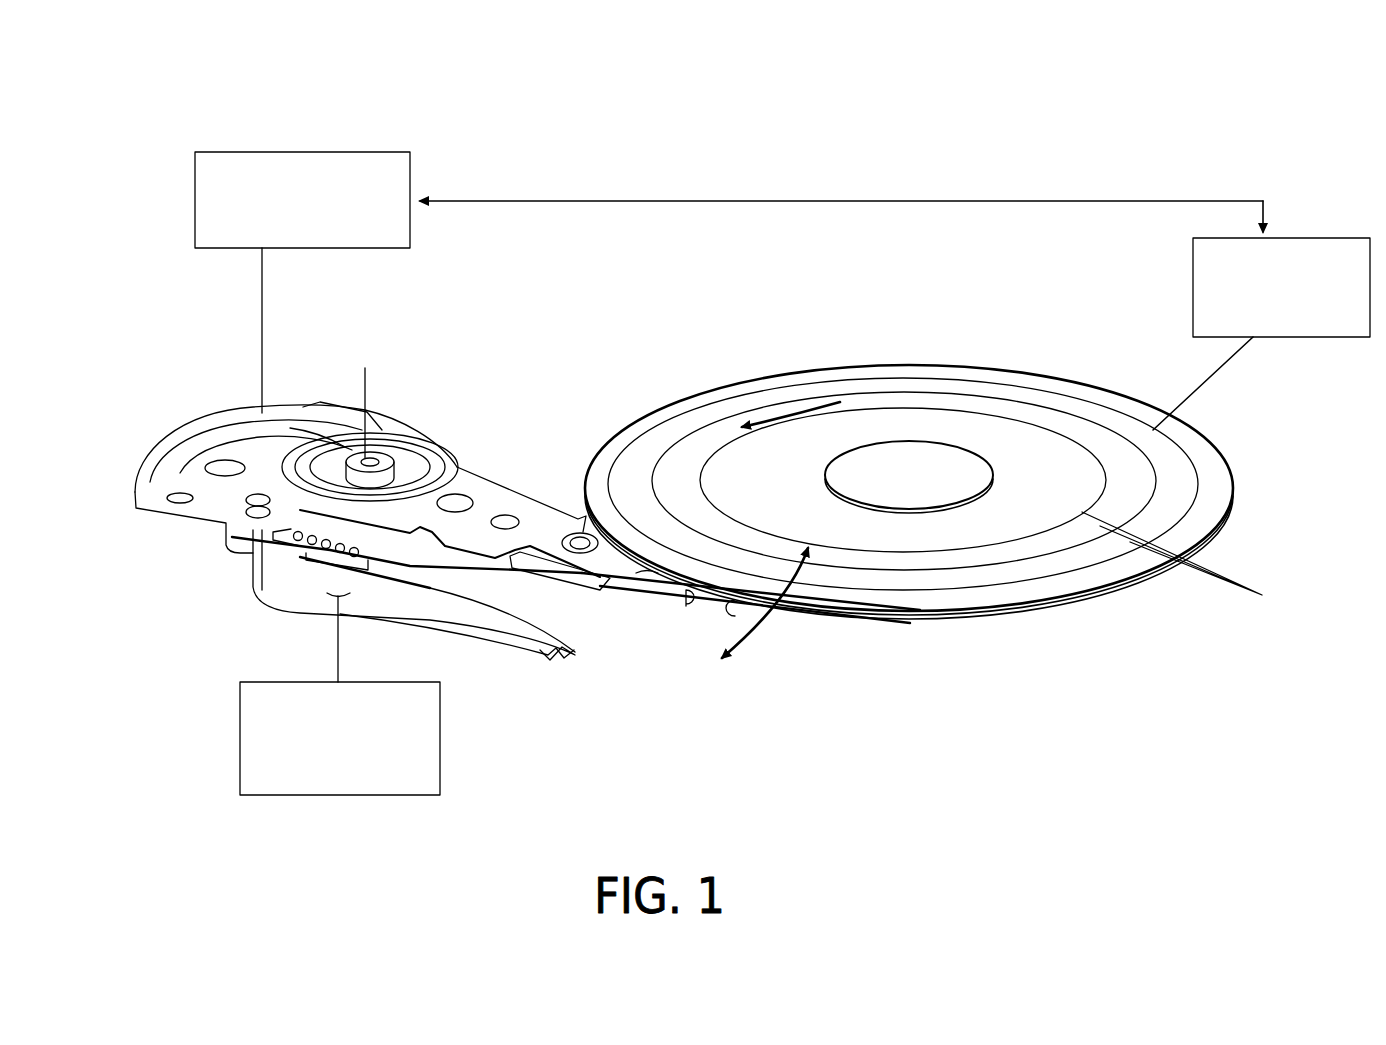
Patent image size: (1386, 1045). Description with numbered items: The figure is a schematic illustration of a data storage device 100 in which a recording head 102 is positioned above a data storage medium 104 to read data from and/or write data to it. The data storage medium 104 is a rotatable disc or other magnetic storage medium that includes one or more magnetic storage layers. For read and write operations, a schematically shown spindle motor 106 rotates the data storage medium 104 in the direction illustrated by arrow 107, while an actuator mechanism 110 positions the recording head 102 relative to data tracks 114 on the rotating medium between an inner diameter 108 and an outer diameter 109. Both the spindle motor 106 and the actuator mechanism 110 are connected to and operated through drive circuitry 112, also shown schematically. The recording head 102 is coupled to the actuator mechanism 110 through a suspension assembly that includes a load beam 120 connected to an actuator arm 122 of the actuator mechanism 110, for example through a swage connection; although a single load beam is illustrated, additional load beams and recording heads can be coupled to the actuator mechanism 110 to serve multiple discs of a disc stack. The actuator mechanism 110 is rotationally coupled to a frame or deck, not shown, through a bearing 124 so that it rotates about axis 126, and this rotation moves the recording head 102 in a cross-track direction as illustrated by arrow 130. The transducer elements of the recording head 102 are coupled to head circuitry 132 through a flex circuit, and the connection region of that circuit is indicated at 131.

The data storage device 100 is at (1125, 133).
The recording head 102 is at (762, 615).
The data storage medium 104 is at (1063, 375).
The spindle motor 106 is at (1327, 238).
The arrow 107 is at (793, 407).
The inner diameter 108 is at (953, 443).
The outer diameter 109 is at (916, 365).
The actuator mechanism 110 is at (397, 408).
The drive circuitry 112 is at (410, 163).
The data tracks 114 is at (1192, 562).
The load beam 120 is at (647, 572).
The actuator arm 122 is at (520, 493).
The bearing 124 is at (327, 413).
The axis 126 is at (358, 446).
The arrow 130 is at (884, 612).
The flex cable connection 131 is at (378, 632).
The head circuitry 132 is at (440, 733).